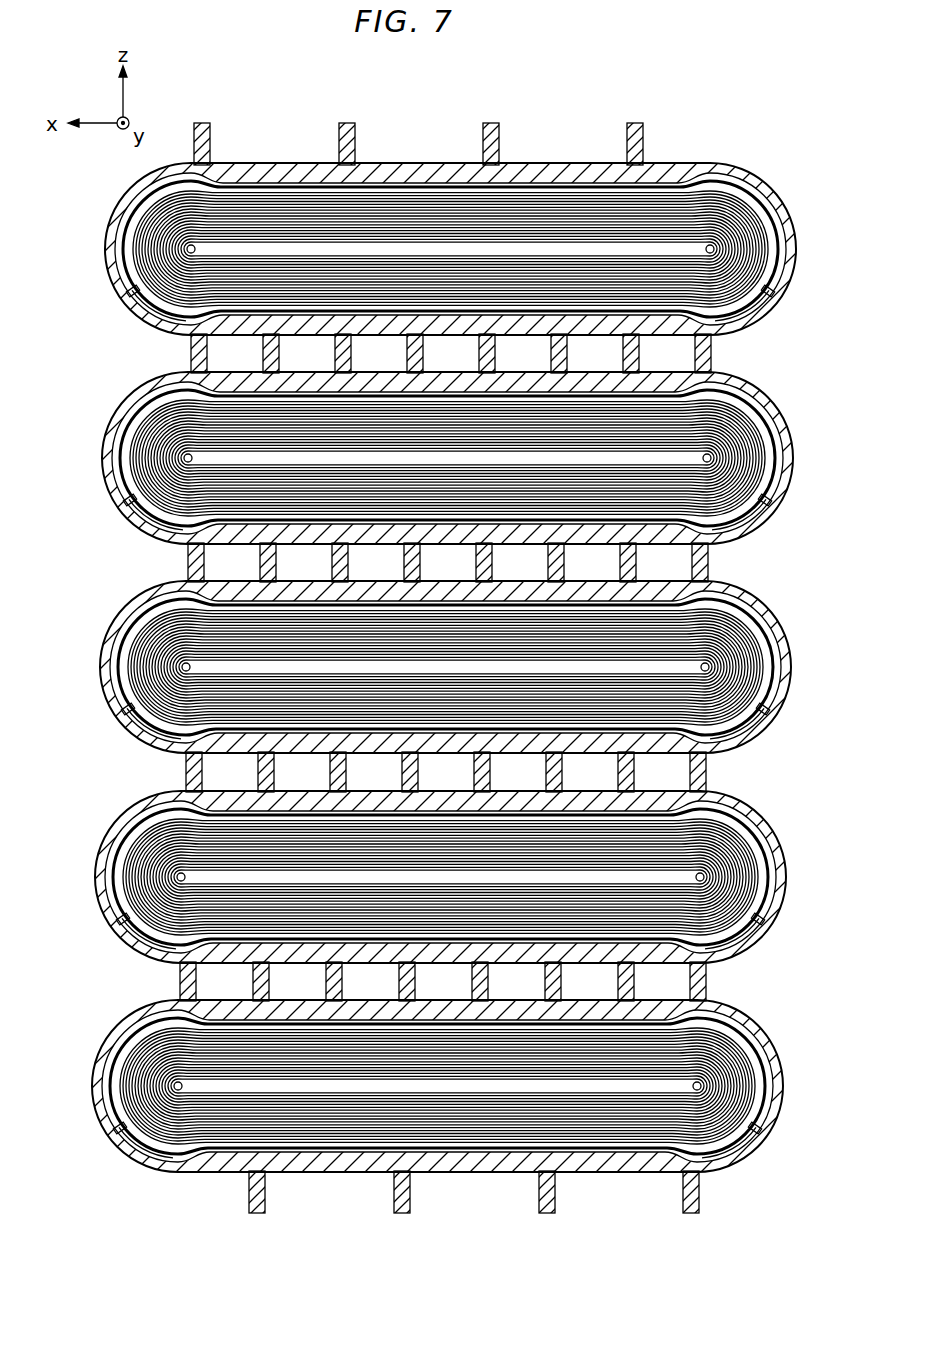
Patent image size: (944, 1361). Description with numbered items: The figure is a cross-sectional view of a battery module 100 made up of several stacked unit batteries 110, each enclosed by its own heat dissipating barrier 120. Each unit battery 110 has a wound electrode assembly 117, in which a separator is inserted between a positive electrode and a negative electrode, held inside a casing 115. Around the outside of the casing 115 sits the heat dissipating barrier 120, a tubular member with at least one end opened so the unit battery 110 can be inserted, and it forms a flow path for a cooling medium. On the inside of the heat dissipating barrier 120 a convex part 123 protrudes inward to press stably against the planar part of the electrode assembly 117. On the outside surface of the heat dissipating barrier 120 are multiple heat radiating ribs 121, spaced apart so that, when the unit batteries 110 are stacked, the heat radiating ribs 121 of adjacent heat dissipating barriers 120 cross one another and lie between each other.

The battery module 100 is at (322, 97).
The unit battery 110 is at (777, 288).
The casing 115 is at (763, 187).
The electrode assembly 117 is at (743, 240).
The heat dissipating barrier 120 is at (717, 170).
The heat radiating ribs 121 is at (642, 128).
The convex part 123 is at (553, 176).